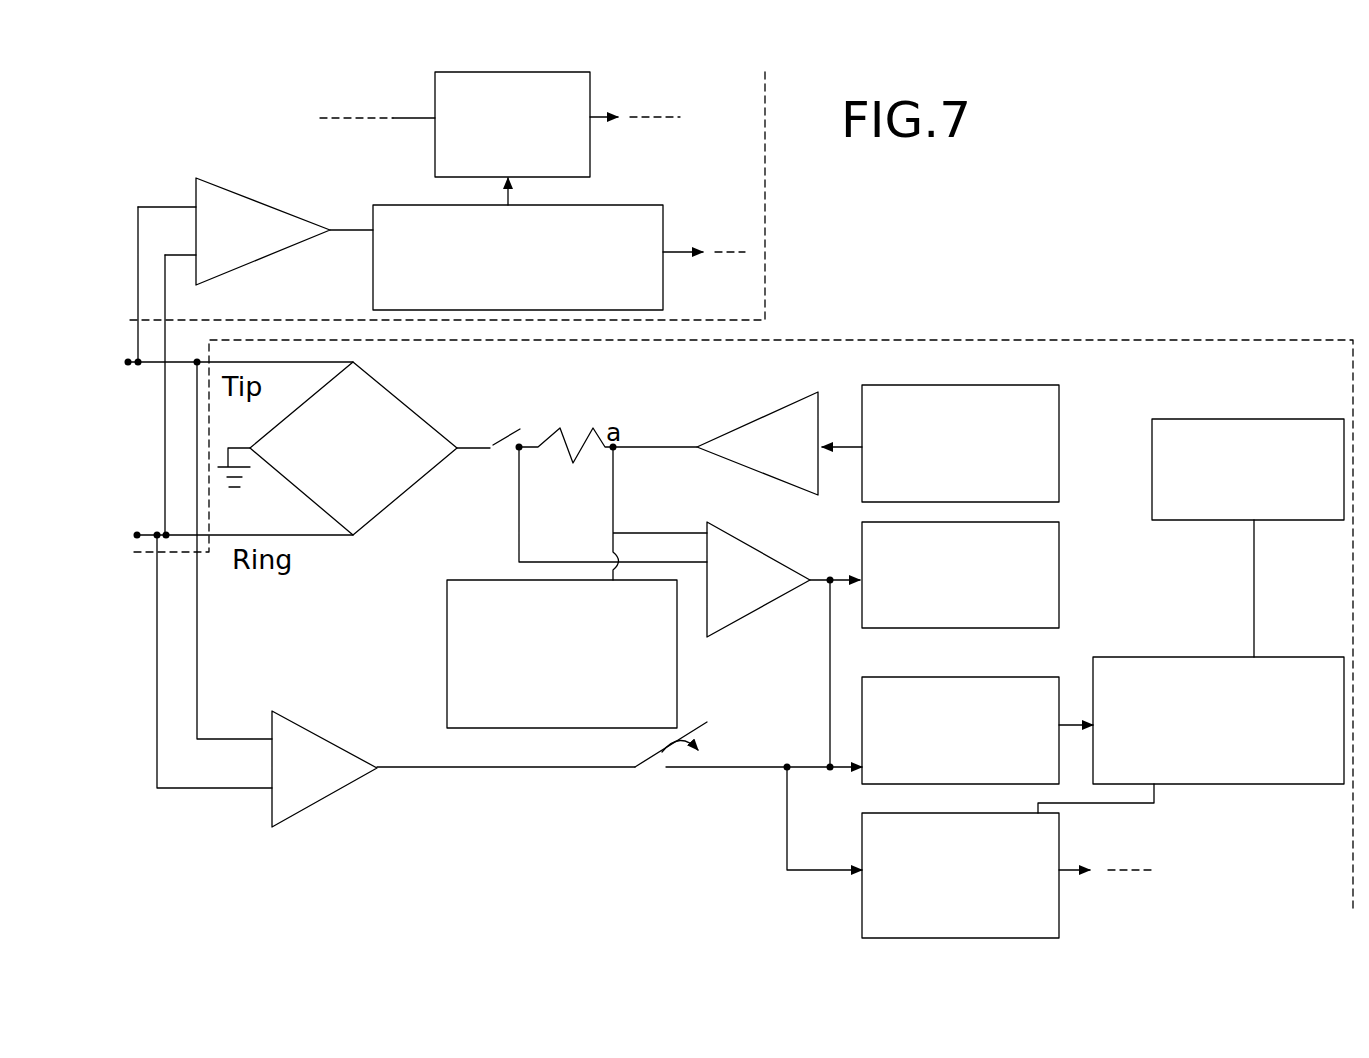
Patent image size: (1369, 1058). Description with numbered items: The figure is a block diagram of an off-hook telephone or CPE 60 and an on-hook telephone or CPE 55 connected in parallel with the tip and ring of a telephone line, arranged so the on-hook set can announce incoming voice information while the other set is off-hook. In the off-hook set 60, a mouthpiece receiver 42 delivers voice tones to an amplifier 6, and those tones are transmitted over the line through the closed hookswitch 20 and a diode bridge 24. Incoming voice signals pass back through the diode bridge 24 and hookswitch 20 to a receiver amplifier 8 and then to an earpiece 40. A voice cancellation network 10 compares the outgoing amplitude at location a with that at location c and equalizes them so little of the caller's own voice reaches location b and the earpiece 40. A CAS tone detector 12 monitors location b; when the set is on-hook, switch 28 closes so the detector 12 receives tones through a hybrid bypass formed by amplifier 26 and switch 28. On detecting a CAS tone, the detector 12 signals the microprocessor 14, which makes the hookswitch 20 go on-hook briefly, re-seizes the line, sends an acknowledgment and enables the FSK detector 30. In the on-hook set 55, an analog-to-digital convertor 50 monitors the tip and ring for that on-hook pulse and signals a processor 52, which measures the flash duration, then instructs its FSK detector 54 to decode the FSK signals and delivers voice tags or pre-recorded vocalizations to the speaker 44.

The amplifier 6 is at (737, 465).
The receiver amplifier 8 is at (727, 630).
The voice cancellation network 10 is at (447, 663).
The CAS tone detector 12 is at (885, 675).
The microprocessor 14 is at (1182, 657).
The hookswitch 20 is at (524, 428).
The diode bridge 24 is at (393, 503).
The amplifier 26 is at (330, 713).
The switch 28 is at (748, 725).
The FSK detector 30 is at (1059, 937).
The earpiece 40 is at (1060, 608).
The mouthpiece receiver 42 is at (1060, 442).
The speaker 44 is at (1190, 420).
The analog-to-digital convertor 50 is at (237, 193).
The processor 52 is at (665, 232).
The FSK detector 54 is at (613, 130).
The on-hook telephone or CPE 55 is at (767, 253).
The off-hook telephone or CPE 60 is at (1055, 337).